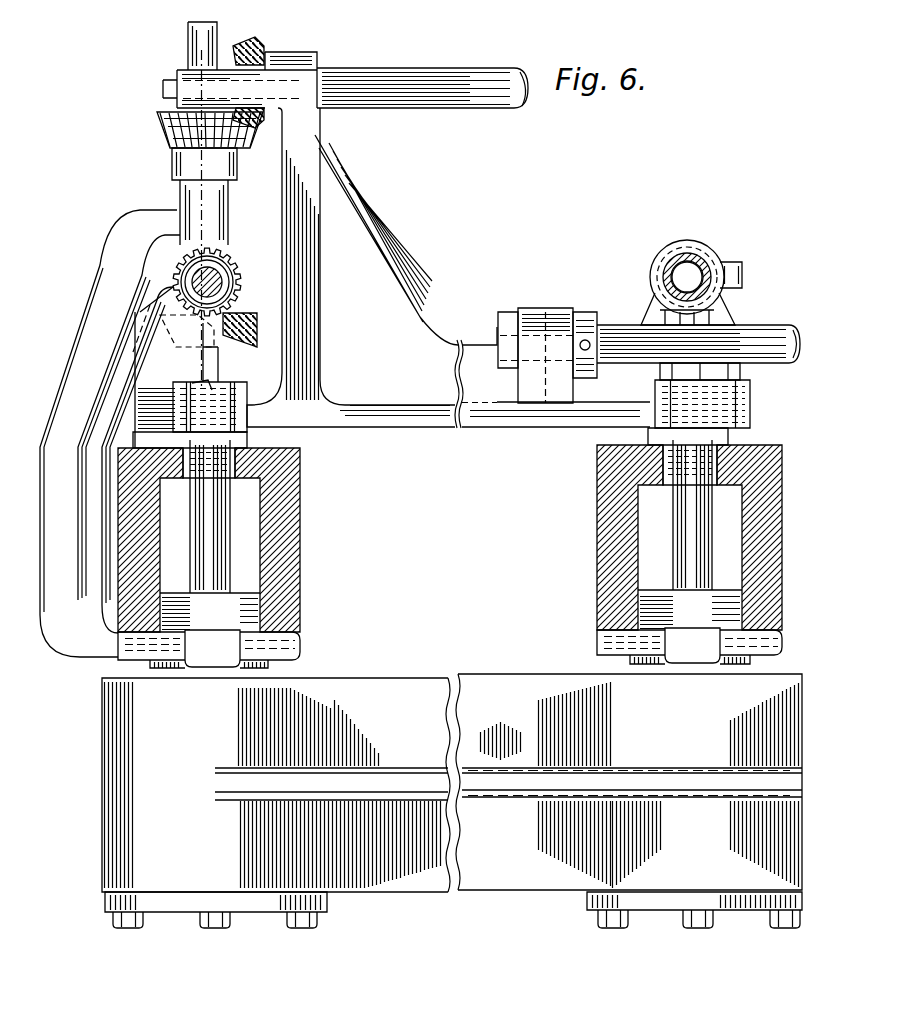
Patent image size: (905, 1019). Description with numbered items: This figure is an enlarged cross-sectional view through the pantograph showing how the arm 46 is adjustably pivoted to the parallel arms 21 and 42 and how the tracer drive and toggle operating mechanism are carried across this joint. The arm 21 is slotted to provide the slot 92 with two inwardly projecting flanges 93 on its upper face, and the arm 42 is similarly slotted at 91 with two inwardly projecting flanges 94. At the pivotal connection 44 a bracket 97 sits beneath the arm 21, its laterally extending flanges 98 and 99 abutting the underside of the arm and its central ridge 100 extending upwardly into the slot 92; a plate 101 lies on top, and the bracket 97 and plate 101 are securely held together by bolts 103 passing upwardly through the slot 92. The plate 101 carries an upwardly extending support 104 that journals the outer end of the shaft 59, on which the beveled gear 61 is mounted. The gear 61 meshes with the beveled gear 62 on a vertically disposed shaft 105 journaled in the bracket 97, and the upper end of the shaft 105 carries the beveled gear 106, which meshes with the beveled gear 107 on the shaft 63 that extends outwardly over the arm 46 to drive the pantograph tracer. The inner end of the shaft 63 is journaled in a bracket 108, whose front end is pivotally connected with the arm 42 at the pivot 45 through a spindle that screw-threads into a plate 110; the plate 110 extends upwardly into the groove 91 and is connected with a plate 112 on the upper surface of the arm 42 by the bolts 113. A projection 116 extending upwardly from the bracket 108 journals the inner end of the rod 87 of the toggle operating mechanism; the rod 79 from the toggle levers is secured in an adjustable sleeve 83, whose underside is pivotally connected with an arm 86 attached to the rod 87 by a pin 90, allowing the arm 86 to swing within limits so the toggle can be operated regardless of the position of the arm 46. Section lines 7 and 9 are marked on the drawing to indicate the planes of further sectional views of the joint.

The section line 9- 9 is at (202, 48).
The section line 7- 7 is at (688, 420).
The shaft 63 is at (525, 110).
The beveled gear 107 is at (238, 48).
The beveled gear 106 is at (165, 120).
The vertically disposed shaft 105 is at (182, 188).
The bracket 108 is at (322, 195).
The projection 116 is at (549, 310).
The rod 87 is at (784, 326).
The adjustable sleeve 83 is at (677, 253).
The rod 79 is at (702, 262).
The arm 86 is at (661, 304).
The pin 90 is at (716, 308).
The beveled gear 61 is at (231, 258).
The shaft 59 is at (192, 281).
The bracket 97 is at (76, 665).
The beveled gear 62 is at (236, 341).
The support 104 is at (208, 364).
The plate 101 is at (218, 450).
The inwardly projecting flanges 93 is at (246, 481).
The slot 92 is at (240, 518).
The arm 21 is at (301, 568).
The bolts 103 is at (229, 553).
The central ridge 100 is at (246, 595).
The flange 99 is at (301, 645).
The flange 98 is at (125, 656).
The pivotal connection 44 is at (122, 852).
The arm 46 is at (446, 912).
The pivot 45 is at (636, 860).
The plate 112 is at (660, 440).
The inwardly projecting flanges 94 is at (642, 468).
The slot 91 is at (640, 482).
The bolts 113 is at (690, 535).
The pantograph arm 42 is at (600, 576).
The plate 110 is at (600, 641).